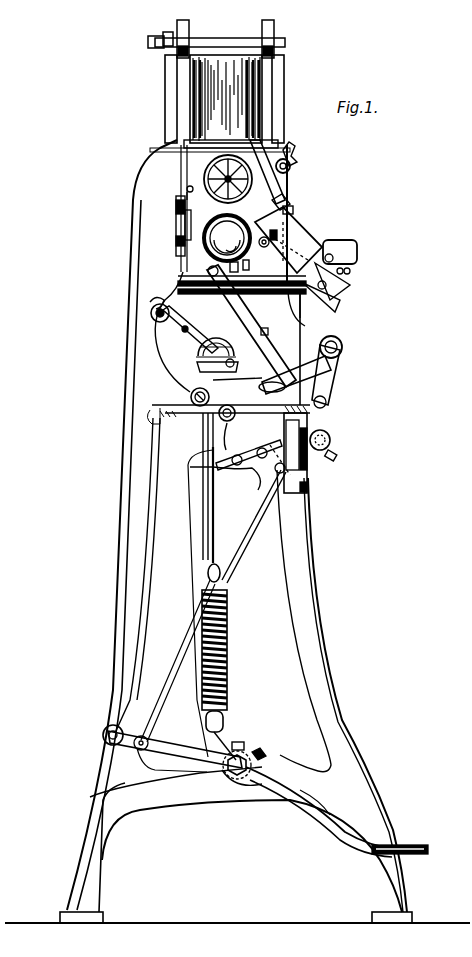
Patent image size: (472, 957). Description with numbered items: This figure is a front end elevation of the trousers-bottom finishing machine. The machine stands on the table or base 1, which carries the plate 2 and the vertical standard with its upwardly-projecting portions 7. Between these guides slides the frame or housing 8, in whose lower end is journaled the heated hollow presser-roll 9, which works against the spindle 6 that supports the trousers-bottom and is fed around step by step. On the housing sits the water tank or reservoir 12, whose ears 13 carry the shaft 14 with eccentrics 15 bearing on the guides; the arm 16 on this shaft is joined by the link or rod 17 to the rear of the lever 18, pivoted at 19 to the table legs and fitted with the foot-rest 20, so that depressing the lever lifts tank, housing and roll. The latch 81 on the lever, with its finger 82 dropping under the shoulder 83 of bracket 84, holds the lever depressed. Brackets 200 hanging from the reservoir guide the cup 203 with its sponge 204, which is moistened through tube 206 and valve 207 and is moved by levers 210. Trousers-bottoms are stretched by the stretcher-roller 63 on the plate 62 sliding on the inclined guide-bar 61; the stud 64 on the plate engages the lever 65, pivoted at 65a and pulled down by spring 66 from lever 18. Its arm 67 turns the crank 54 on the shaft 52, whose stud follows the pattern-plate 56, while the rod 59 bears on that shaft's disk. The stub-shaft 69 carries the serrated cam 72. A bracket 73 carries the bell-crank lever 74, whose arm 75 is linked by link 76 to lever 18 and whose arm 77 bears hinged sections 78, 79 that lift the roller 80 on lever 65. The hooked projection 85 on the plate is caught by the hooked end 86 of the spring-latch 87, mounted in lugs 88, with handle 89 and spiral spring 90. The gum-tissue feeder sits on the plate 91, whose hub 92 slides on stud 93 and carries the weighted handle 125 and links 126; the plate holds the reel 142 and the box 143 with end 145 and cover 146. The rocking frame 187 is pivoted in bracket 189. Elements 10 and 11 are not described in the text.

The table or base 1 is at (338, 590).
The plate 2 is at (165, 405).
The spindle 6 is at (227, 238).
The upwardly-projecting portions 7 is at (176, 98).
The frame or housing 8 is at (195, 160).
The hollow presser-roll 9 is at (187, 188).
The segment 10 is at (222, 350).
The link 11 is at (190, 329).
The water tank or reservoir 12 is at (226, 82).
The ears 13 is at (189, 34).
The shaft 14 is at (222, 38).
The eccentrics 15 is at (180, 24).
The arm 16 is at (158, 41).
The link or rod 17 is at (130, 378).
The lever 18 is at (166, 746).
The pivot 19 is at (248, 752).
The foot-rest 20 is at (414, 848).
The shaft or spindle 52 is at (200, 368).
The arm or crank 54 is at (242, 361).
The pattern-plate 56 is at (212, 343).
The rod 59 is at (207, 523).
The inclined guide-bar 61 is at (238, 300).
The plate 62 is at (313, 374).
The stretcher-roller 63 is at (344, 349).
The stud 64 is at (322, 391).
The lever 65 is at (262, 382).
The pivot 65a is at (197, 410).
The spring 66 is at (229, 636).
The arm 67 is at (237, 378).
The stub-shaft 69 is at (152, 330).
The serrated cam 72 is at (154, 295).
The bracket 73 is at (312, 428).
The bell-crank lever 74 is at (332, 440).
The arm 75 is at (318, 458).
The link 76 is at (252, 544).
The arm 77 is at (272, 452).
The pivoted section 78 is at (244, 455).
The pivoted section 79 is at (225, 472).
The antifriction-roller 80 is at (236, 415).
The latch 81 is at (340, 832).
The finger 82 is at (262, 760).
The shoulder 83 is at (262, 750).
The bracket 84 is at (240, 742).
The hooked projection 85 is at (270, 332).
The lower hooked end 86 is at (185, 256).
The spring-latch 87 is at (185, 218).
The lugs 88 is at (180, 202).
The handle 89 is at (185, 195).
The spiral spring 90 is at (180, 238).
The plate 91 is at (342, 306).
The hub 92 is at (299, 309).
The stud 93 is at (345, 279).
The weighted handle 125 is at (345, 256).
The links 126 is at (352, 270).
The reel 142 is at (340, 288).
The box 143 is at (305, 236).
The end 145 is at (302, 247).
The cover 146 is at (332, 243).
The rocking frame 187 is at (245, 260).
The bracket 189 is at (260, 257).
The brackets 200 is at (248, 152).
The cup 203 is at (290, 201).
The sponge 204 is at (296, 211).
The tube 206 is at (290, 170).
The valve 207 is at (296, 154).
The levers 210 is at (283, 193).